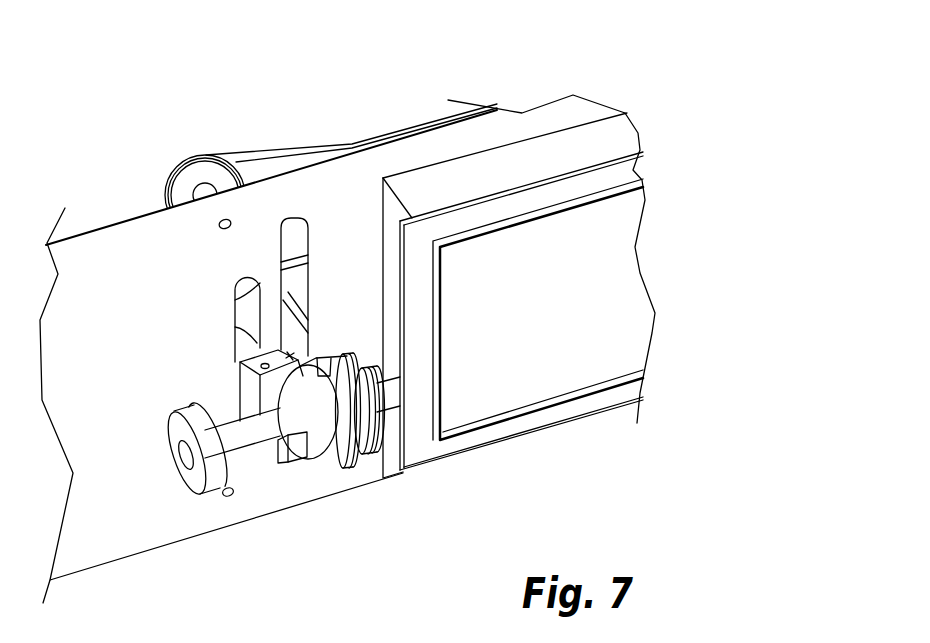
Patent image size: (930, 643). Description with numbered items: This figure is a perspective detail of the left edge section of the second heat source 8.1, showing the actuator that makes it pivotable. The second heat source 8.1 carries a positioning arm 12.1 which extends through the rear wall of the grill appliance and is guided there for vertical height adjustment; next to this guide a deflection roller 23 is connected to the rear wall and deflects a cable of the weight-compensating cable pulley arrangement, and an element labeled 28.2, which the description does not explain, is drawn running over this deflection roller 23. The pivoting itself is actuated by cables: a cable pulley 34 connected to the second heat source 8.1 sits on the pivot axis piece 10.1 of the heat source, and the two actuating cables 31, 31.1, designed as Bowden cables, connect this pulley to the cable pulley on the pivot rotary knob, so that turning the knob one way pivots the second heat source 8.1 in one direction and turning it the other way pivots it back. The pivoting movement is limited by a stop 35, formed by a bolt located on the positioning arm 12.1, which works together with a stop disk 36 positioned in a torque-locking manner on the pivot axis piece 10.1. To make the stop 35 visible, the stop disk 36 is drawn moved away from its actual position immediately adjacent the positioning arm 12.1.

The second heat source 8.1 is at (612, 252).
The pivot axis piece 10.1 is at (379, 379).
The positioning arm 12.1 is at (262, 352).
The deflection roller 23 is at (204, 151).
The belt 28.2 is at (275, 148).
The actuating cable 31 is at (294, 305).
The actuating cable 31.1 is at (248, 343).
The cable pulley 34 is at (361, 472).
The stop 35 is at (242, 401).
The stop disk 36 is at (176, 425).